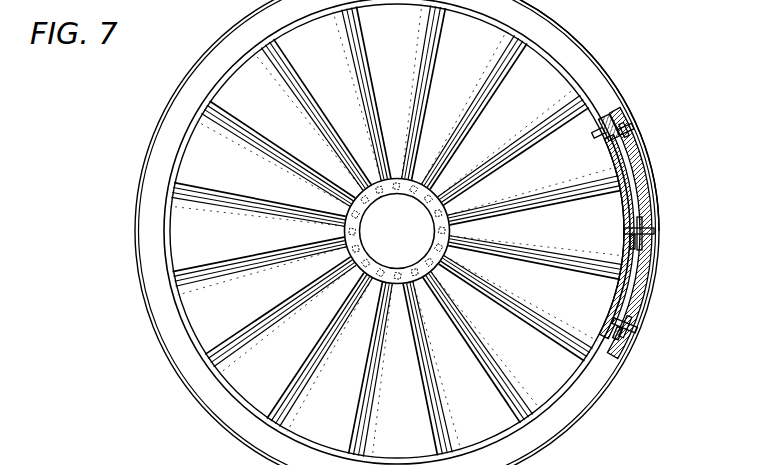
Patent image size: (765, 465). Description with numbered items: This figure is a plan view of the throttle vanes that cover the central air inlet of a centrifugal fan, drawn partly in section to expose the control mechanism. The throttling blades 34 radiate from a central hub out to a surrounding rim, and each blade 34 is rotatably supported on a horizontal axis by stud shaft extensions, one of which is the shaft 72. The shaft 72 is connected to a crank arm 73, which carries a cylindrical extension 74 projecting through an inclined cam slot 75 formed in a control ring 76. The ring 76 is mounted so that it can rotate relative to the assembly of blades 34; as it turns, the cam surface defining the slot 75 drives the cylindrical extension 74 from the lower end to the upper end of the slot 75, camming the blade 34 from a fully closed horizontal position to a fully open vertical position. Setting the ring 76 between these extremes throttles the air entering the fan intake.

The throttling blades 34 is at (231, 90).
The stud shaft extension 72 is at (628, 157).
The crank arm 73 is at (608, 113).
The cylindrical extension 74 is at (635, 133).
The inclined cam slot 75 is at (622, 125).
The control ring 76 is at (648, 193).